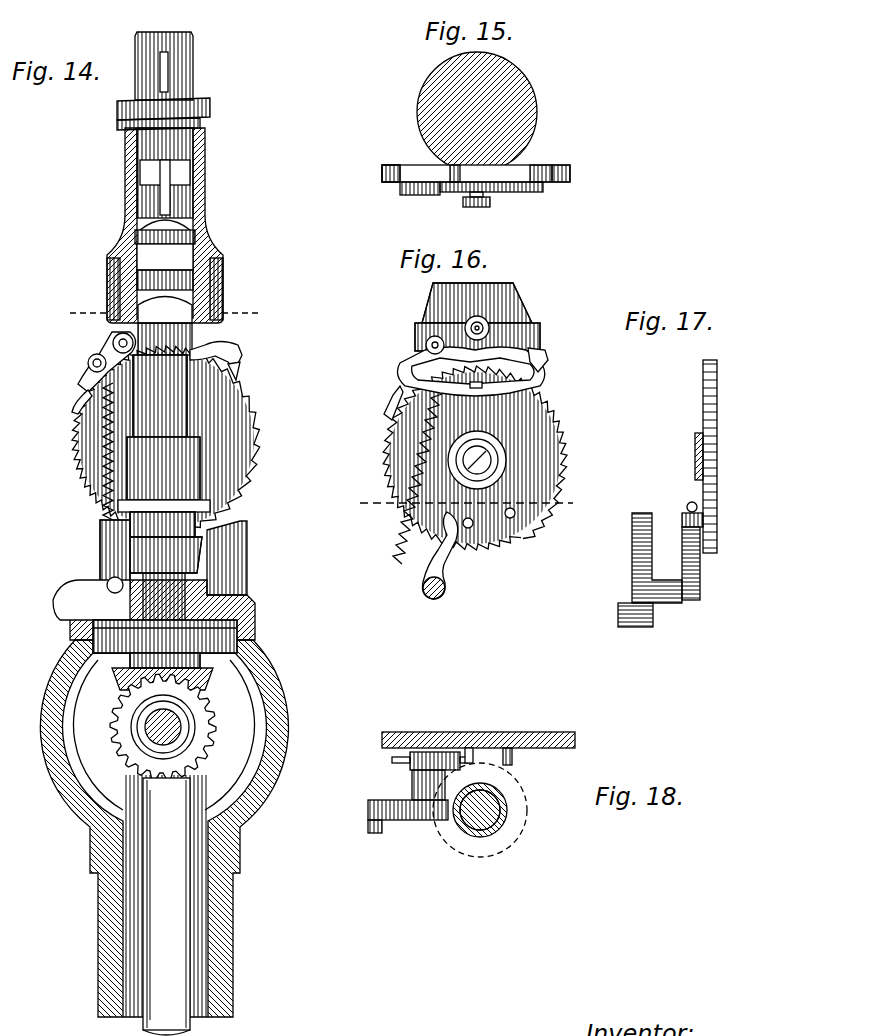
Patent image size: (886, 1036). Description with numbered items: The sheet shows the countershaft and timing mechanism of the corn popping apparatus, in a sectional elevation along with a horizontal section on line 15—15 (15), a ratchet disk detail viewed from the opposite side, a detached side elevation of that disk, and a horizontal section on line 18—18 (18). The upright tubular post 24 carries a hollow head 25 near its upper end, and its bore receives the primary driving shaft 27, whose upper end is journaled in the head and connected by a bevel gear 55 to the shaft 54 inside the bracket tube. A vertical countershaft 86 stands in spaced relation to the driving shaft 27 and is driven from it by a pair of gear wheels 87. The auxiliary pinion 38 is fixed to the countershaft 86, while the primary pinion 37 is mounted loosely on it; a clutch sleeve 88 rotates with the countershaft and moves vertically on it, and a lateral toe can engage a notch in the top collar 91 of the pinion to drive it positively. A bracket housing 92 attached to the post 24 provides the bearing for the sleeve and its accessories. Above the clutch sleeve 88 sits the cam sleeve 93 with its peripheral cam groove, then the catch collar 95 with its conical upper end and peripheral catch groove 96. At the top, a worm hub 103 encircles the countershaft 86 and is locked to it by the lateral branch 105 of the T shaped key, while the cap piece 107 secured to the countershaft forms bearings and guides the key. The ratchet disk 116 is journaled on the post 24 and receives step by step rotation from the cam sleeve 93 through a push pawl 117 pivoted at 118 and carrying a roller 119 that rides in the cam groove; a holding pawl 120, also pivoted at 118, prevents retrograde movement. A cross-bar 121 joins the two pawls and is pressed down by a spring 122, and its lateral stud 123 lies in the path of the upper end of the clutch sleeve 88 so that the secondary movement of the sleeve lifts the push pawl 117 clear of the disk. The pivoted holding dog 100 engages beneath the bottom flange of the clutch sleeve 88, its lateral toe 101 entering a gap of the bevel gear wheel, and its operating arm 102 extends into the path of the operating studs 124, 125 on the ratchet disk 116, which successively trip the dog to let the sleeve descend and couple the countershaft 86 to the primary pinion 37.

In FIG. 14, the section line 15— 15 is at (159, 317).
In FIG. 16, the section line 18— 18 is at (472, 504).
In FIG. 14, the upright tubular post 24 is at (220, 266).
In FIG. 15, the upright tubular post 24 is at (524, 94).
In FIG. 16, the upright tubular post 24 is at (433, 297).
In FIG. 14, the hollow head 25 is at (290, 721).
In FIG. 14, the primary driving shaft 27 is at (150, 852).
In FIG. 14, the primary pinion 37 is at (205, 554).
In FIG. 14, the auxiliary pinion 38 is at (240, 579).
In FIG. 14, the shaft 54 is at (140, 726).
In FIG. 14, the bevel gear 55 is at (200, 727).
In FIG. 14, the vertical countershaft 86 is at (152, 192).
In FIG. 18, the vertical countershaft 86 is at (505, 809).
In FIG. 14, the gear wheels 87 is at (237, 634).
In FIG. 14, the clutch sleeve 88 is at (164, 433).
In FIG. 14, the top collar 91 is at (162, 524).
In FIG. 14, the bracket housing 92 is at (110, 280).
In FIG. 14, the cam sleeve 93 is at (165, 326).
In FIG. 14, the catch collar 95 is at (142, 260).
In FIG. 14, the peripheral catch groove 96 is at (135, 237).
In FIG. 14, the pivoted holding dog 100 is at (100, 535).
In FIG. 17, the pivoted holding dog 100 is at (635, 557).
In FIG. 18, the pivoted holding dog 100 is at (406, 820).
In FIG. 14, the lateral toe 101 is at (58, 615).
In FIG. 17, the lateral toe 101 is at (618, 620).
In FIG. 18, the lateral toe 101 is at (372, 833).
In FIG. 16, the operating arm 102 is at (446, 570).
In FIG. 17, the operating arm 102 is at (700, 561).
In FIG. 18, the operating arm 102 is at (428, 752).
In FIG. 14, the worm hub 103 is at (130, 128).
In FIG. 14, the lateral branch 105 is at (168, 92).
In FIG. 14, the cap piece 107 is at (190, 54).
In FIG. 14, the ratchet disk 116 is at (246, 432).
In FIG. 15, the ratchet disk 116 is at (571, 176).
In FIG. 16, the ratchet disk 116 is at (565, 436).
In FIG. 17, the ratchet disk 116 is at (717, 429).
In FIG. 18, the ratchet disk 116 is at (541, 732).
In FIG. 14, the push pawl 117 is at (241, 358).
In FIG. 15, the push pawl 117 is at (540, 172).
In FIG. 16, the push pawl 117 is at (540, 347).
In FIG. 14, the pivot 118 is at (112, 343).
In FIG. 15, the pivot 118 is at (420, 196).
In FIG. 16, the pivot 118 is at (426, 343).
In FIG. 15, the roller 119 is at (478, 208).
In FIG. 16, the roller 119 is at (490, 325).
In FIG. 14, the holding pawl 120 is at (74, 400).
In FIG. 15, the holding pawl 120 is at (382, 176).
In FIG. 16, the holding pawl 120 is at (388, 406).
In FIG. 14, the cross-bar 121 is at (233, 374).
In FIG. 15, the cross-bar 121 is at (516, 193).
In FIG. 16, the cross-bar 121 is at (506, 390).
In FIG. 14, the spring 122 is at (114, 468).
In FIG. 16, the spring 122 is at (430, 466).
In FIG. 16, the lateral stud 123 is at (476, 390).
In FIG. 16, the operating stud 124 is at (469, 518).
In FIG. 17, the operating stud 124 is at (682, 517).
In FIG. 18, the operating stud 124 is at (470, 748).
In FIG. 16, the operating stud 125 is at (512, 508).
In FIG. 17, the operating stud 125 is at (688, 503).
In FIG. 18, the operating stud 125 is at (513, 761).